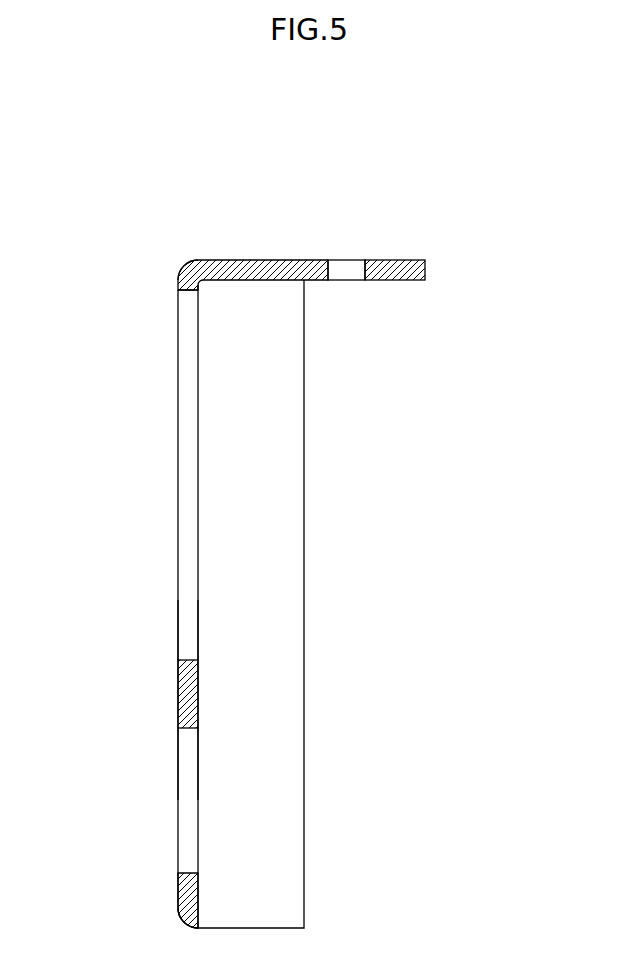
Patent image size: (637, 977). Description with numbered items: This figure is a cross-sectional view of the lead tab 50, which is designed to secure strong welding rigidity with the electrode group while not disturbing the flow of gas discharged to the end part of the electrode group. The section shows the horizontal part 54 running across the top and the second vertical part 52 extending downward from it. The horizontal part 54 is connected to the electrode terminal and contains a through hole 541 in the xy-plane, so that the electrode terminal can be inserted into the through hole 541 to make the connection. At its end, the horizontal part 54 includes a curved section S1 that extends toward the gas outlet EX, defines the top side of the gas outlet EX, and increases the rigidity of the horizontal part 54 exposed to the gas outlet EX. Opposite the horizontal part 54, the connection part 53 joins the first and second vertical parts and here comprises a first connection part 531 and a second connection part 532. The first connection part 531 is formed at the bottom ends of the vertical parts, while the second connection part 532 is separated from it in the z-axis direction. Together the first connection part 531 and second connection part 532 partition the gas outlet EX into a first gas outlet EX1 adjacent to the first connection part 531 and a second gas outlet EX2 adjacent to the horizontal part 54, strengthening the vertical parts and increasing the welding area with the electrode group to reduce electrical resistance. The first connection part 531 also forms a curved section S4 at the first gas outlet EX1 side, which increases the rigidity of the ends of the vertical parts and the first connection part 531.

The lead tab 50 is at (453, 220).
The second vertical part 52 is at (287, 483).
The connection part 53 is at (378, 678).
The first connection part 531 is at (198, 885).
The second connection part 532 is at (198, 693).
The horizontal part 54 is at (272, 261).
The through hole 541 is at (346, 261).
The curved section S1 is at (184, 268).
The curved section S4 is at (181, 917).
The gas outlet EX is at (84, 598).
The first gas outlet EX1 is at (188, 768).
The second gas outlet EX2 is at (188, 613).